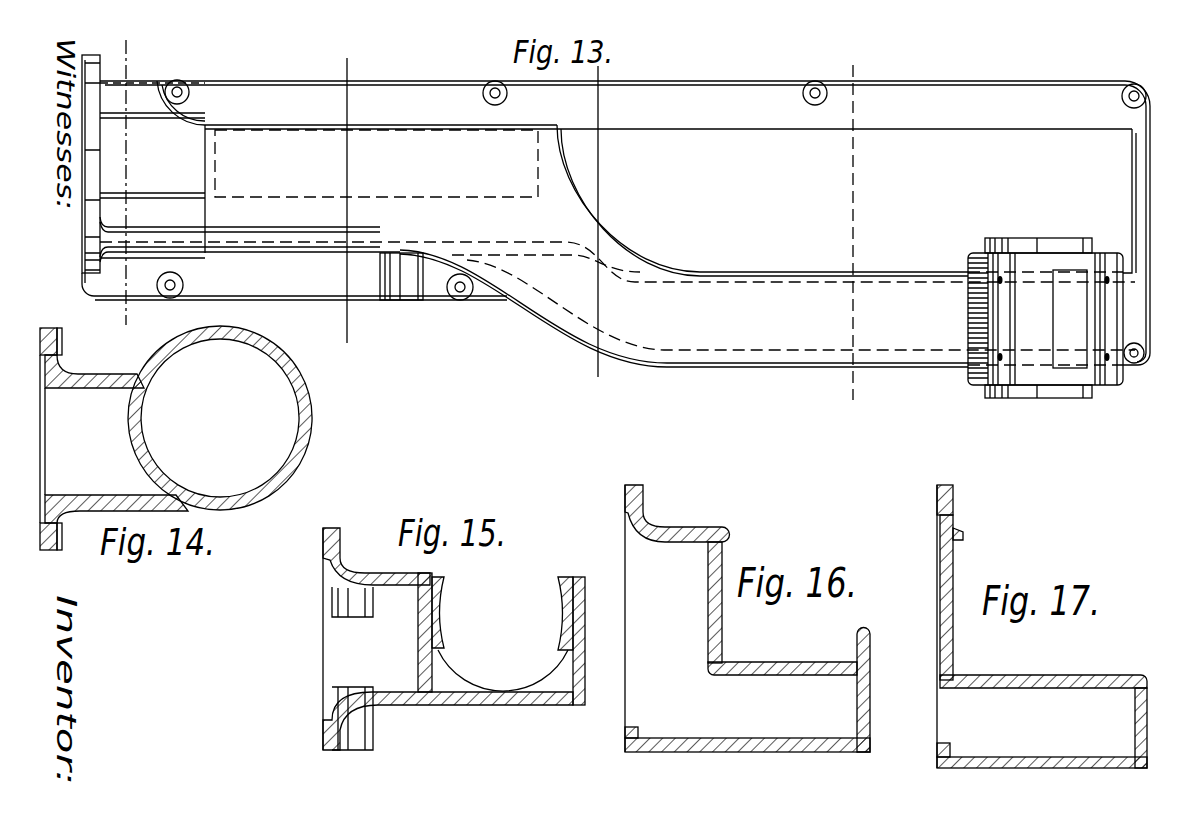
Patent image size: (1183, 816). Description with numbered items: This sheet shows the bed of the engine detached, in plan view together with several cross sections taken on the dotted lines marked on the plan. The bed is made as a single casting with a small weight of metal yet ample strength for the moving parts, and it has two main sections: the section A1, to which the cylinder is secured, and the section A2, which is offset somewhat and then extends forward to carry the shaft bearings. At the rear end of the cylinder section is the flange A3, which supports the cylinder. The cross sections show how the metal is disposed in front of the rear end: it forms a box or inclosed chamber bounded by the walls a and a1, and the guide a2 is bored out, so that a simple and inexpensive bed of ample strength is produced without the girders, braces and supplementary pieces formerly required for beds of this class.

In FIG. 13, the flange A3 is at (97, 54).
In FIG. 13, the main bed section A1 is at (617, 203).
In FIG. 13, the offset bed section A2 is at (767, 318).
In FIG. 15, the wall a is at (395, 703).
In FIG. 15, the wall a1 is at (418, 672).
In FIG. 15, the guide a2 is at (441, 612).